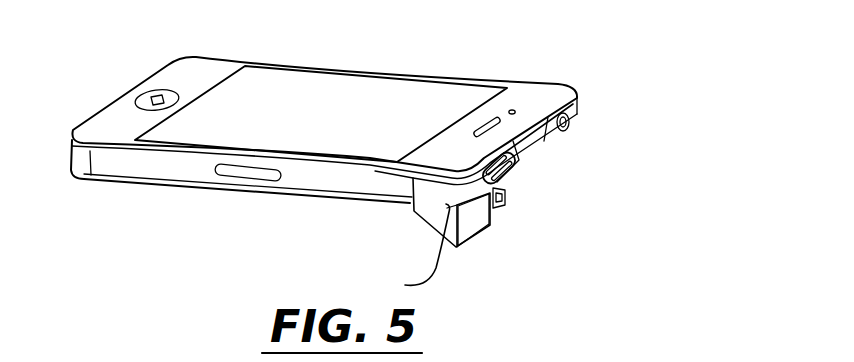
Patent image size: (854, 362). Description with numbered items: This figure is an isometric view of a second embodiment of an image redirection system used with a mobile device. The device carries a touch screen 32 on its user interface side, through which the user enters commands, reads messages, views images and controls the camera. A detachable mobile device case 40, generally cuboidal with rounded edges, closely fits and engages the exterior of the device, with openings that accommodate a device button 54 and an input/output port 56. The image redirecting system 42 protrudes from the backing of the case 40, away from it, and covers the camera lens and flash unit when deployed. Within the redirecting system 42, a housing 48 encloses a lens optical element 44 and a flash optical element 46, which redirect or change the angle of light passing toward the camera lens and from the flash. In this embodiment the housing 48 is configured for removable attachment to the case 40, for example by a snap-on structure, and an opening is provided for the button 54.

The touch screen 32 is at (353, 99).
The detachable mobile device case 40 is at (500, 79).
The image redirecting system 42 is at (428, 226).
The lens optical element 44 is at (478, 219).
The flash optical element 46 is at (508, 198).
The housing 48 is at (413, 251).
The device button 54 is at (521, 168).
The input/output port 56 is at (571, 123).